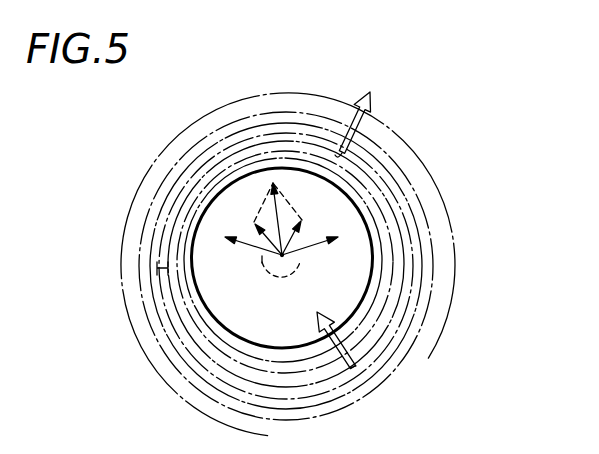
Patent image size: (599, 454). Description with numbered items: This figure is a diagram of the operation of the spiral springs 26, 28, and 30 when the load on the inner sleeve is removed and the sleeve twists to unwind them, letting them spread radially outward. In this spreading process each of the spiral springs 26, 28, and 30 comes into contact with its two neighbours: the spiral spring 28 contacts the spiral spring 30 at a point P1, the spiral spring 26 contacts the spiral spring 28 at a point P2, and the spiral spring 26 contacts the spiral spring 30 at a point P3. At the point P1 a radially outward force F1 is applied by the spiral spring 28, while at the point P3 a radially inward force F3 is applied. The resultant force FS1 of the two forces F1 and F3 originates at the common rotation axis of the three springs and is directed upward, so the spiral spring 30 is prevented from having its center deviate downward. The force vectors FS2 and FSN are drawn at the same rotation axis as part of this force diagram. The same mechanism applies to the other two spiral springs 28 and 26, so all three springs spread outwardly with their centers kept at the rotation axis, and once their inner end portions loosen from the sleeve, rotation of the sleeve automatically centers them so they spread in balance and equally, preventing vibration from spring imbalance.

The spiral spring 26 is at (452, 295).
The spiral spring 28 is at (200, 412).
The spiral spring 30 is at (232, 100).
The contact point P1 is at (334, 155).
The contact point P2 is at (162, 268).
The contact point P3 is at (355, 362).
The radially outward force F1 is at (370, 112).
The radially inward force F3 is at (322, 327).
The resultant force FS1 is at (277, 215).
The force component FS2 is at (324, 245).
The force component FSN is at (254, 248).